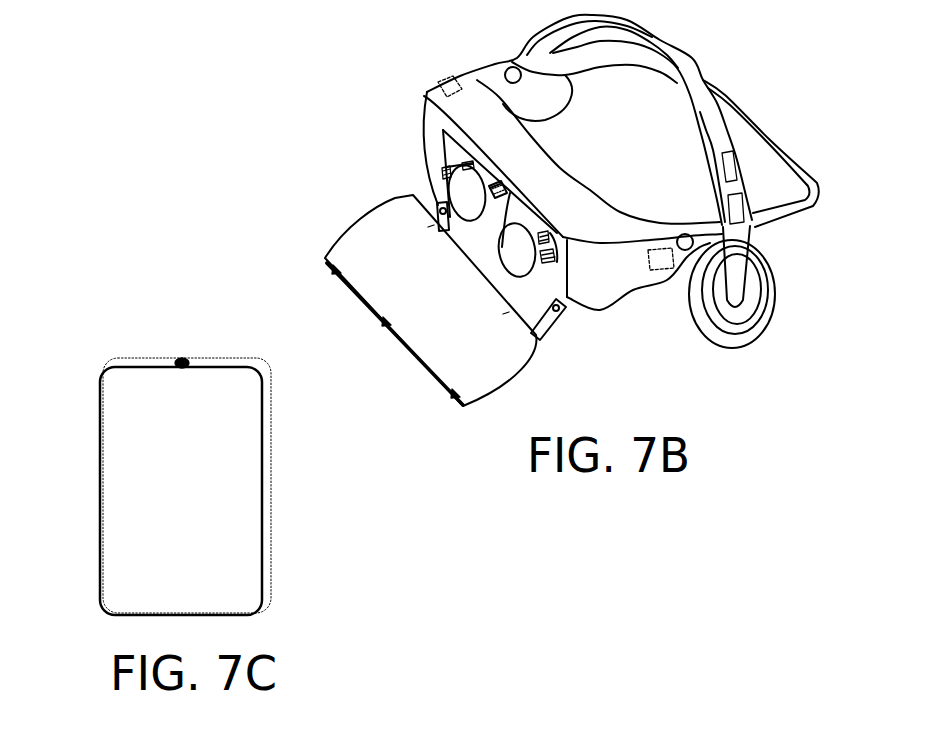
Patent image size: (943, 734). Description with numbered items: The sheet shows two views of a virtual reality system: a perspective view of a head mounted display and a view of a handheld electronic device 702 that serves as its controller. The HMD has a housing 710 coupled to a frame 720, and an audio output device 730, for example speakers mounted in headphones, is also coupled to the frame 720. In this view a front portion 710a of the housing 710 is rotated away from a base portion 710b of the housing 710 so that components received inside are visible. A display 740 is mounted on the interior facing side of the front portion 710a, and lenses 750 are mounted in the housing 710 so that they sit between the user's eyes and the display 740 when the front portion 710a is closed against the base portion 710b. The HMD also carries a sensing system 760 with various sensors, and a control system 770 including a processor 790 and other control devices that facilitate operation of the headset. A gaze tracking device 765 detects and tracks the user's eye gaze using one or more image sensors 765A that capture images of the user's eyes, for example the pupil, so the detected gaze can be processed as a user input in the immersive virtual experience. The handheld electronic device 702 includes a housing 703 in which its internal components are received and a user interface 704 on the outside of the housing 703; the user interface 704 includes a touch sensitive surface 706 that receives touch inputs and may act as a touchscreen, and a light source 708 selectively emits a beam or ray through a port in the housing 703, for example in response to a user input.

In FIG. 7B, the housing 710 is at (426, 74).
In FIG. 7B, the front portion 710a is at (326, 260).
In FIG. 7B, the base portion 710b is at (465, 78).
In FIG. 7B, the frame 720 is at (783, 143).
In FIG. 7B, the audio output device 730 is at (763, 255).
In FIG. 7B, the display 740 is at (358, 232).
In FIG. 7B, the lenses 750 is at (438, 206).
In FIG. 7B, the sensing system 760 is at (428, 90).
In FIG. 7B, the gaze tracking device 765 is at (507, 193).
In FIG. 7B, the image sensor 765A is at (502, 190).
In FIG. 7B, the control system 770 is at (685, 305).
In FIG. 7B, the processor 790 is at (660, 268).
In FIG. 7C, the handheld electronic device 702 is at (153, 450).
In FIG. 7C, the housing 703 is at (137, 357).
In FIG. 7C, the user interface 704 is at (103, 510).
In FIG. 7C, the touch sensitive surface 706 is at (120, 465).
In FIG. 7C, the light source 708 is at (181, 360).